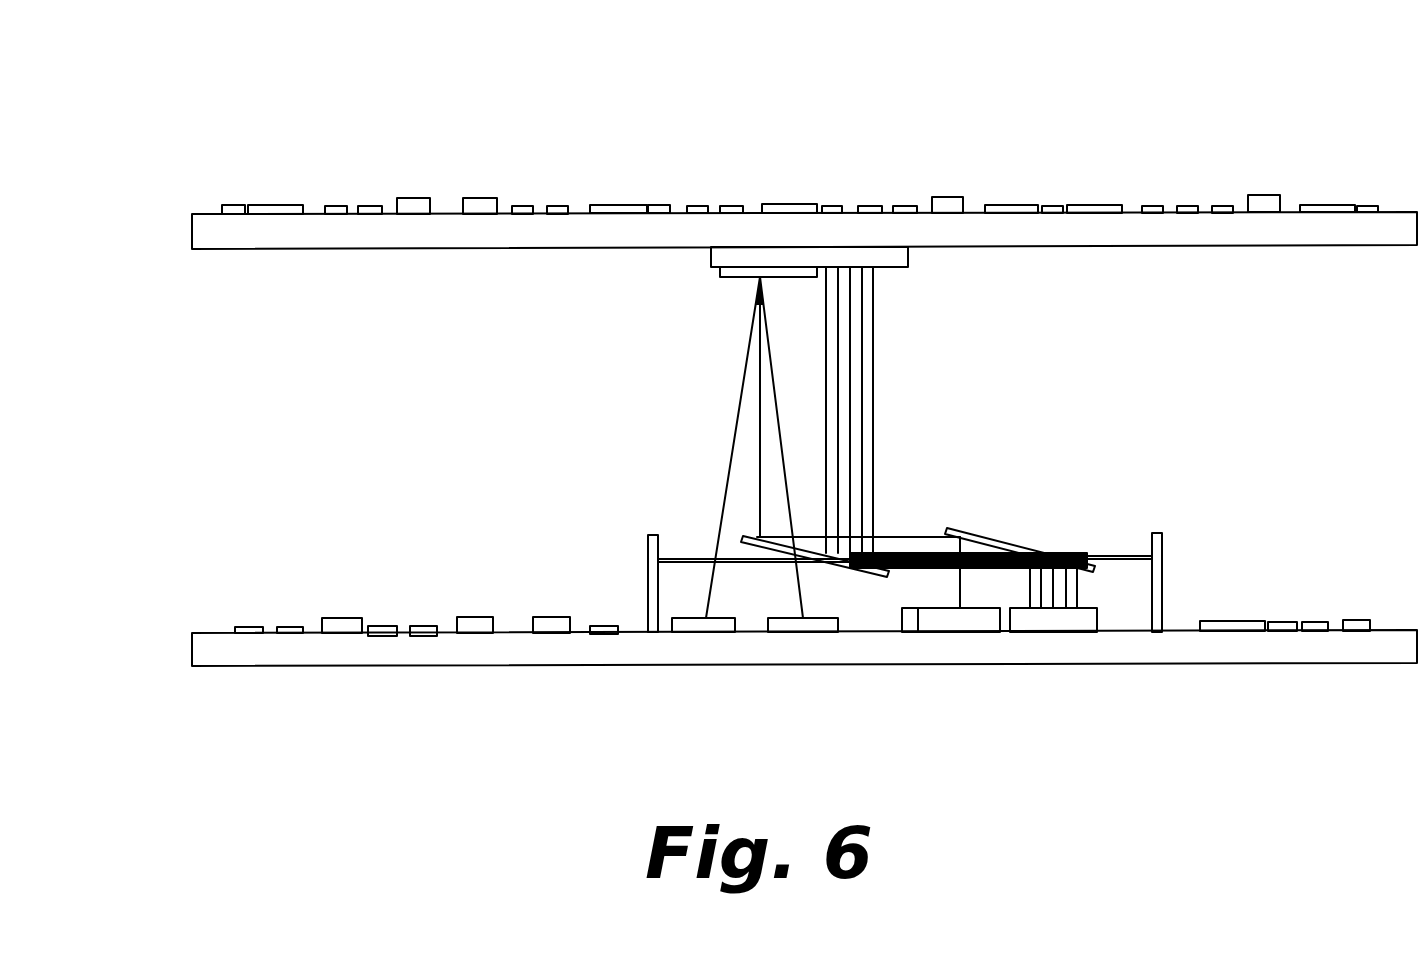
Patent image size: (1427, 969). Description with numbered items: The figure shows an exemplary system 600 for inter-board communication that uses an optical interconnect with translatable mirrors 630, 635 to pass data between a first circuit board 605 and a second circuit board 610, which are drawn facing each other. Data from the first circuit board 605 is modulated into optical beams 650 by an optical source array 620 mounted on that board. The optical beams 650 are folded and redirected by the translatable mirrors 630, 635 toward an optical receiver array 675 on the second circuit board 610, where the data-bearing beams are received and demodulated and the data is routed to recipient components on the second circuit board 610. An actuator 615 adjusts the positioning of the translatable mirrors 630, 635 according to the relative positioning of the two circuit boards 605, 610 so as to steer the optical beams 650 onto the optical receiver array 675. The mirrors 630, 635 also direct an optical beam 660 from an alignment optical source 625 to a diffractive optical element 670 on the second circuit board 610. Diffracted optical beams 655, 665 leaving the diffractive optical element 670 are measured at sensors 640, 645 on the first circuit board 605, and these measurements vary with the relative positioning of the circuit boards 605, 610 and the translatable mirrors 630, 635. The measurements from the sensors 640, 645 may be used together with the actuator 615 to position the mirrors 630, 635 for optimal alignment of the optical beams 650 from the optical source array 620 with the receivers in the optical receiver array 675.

The system for inter-board communication 600 is at (147, 150).
The first circuit board 605 is at (1278, 648).
The second circuit board 610 is at (1270, 228).
The actuator 615 is at (1180, 562).
The optical source array 620 is at (1068, 617).
The alignment optical source 625 is at (968, 617).
The translatable mirror 630 is at (970, 535).
The translatable mirror 635 is at (862, 578).
The sensor 640 is at (803, 625).
The sensor 645 is at (698, 625).
The optical beams 650 is at (900, 418).
The diffracted optical beam 655 is at (776, 403).
The optical beam 660 is at (757, 450).
The diffracted optical beam 665 is at (727, 485).
The diffractive optical element 670 is at (752, 273).
The optical receiver array 675 is at (893, 260).